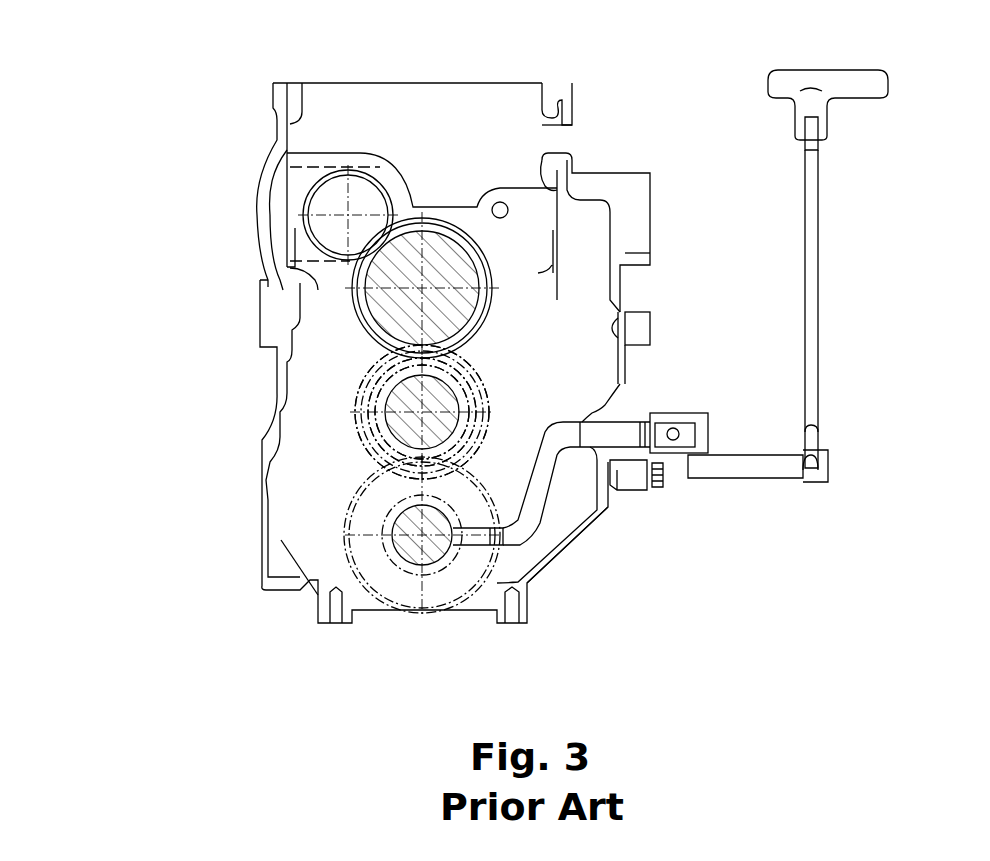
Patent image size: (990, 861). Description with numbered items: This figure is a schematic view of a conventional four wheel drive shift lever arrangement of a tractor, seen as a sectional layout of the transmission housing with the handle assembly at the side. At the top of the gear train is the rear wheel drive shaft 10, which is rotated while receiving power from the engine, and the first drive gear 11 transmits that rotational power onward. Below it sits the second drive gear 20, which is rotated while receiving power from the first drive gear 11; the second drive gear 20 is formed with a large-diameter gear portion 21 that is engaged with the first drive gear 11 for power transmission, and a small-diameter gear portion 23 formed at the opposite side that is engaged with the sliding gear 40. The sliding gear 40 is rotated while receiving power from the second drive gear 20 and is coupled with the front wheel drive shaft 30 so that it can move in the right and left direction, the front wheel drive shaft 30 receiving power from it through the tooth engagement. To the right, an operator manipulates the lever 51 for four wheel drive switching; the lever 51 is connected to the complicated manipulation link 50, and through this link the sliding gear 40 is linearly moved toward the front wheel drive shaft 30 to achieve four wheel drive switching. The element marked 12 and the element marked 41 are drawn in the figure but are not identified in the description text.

The rear wheel drive shaft 10 is at (447, 253).
The first drive gear 11 is at (453, 353).
The intermediate gear 12 is at (437, 403).
The second drive gear 20 is at (157, 363).
The large-diameter gear portion 21 is at (350, 387).
The small-diameter gear portion 23 is at (350, 413).
The front wheel drive shaft 30 is at (390, 548).
The sliding gear 40 is at (403, 587).
The gear teeth 41 is at (437, 590).
The manipulation link 50 is at (540, 482).
The lever 51 is at (811, 207).